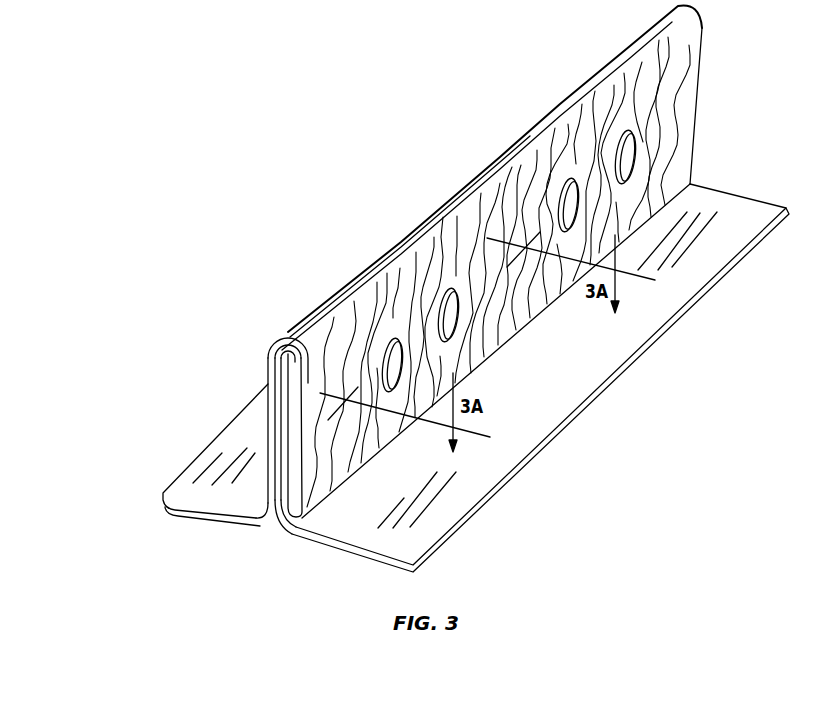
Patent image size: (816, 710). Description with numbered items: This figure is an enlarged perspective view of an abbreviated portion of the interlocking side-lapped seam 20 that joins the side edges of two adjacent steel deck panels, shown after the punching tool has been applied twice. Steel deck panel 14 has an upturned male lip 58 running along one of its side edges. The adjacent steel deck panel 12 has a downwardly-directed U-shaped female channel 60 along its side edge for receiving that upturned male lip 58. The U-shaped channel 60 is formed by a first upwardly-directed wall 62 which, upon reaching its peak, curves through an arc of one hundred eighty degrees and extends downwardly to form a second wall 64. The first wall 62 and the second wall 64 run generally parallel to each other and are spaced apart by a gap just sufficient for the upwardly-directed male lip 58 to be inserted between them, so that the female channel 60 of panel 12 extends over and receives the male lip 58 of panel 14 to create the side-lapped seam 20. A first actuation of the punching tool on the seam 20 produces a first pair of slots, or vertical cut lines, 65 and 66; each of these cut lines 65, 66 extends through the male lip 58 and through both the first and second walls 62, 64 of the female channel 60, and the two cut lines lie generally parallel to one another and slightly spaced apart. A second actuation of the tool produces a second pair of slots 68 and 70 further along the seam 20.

The steel deck panel 12 is at (182, 488).
The steel deck panel 14 is at (522, 438).
The interlocking side-lapped seam 20 is at (483, 166).
The upturned male lip 58 is at (262, 398).
The U-shaped female channel 60 is at (269, 531).
The first upwardly-directed wall 62 is at (262, 443).
The second wall 64 is at (290, 498).
The vertical cut line 65 is at (398, 338).
The vertical cut line 66 is at (456, 290).
The slot 68 is at (578, 178).
The slot 70 is at (636, 152).